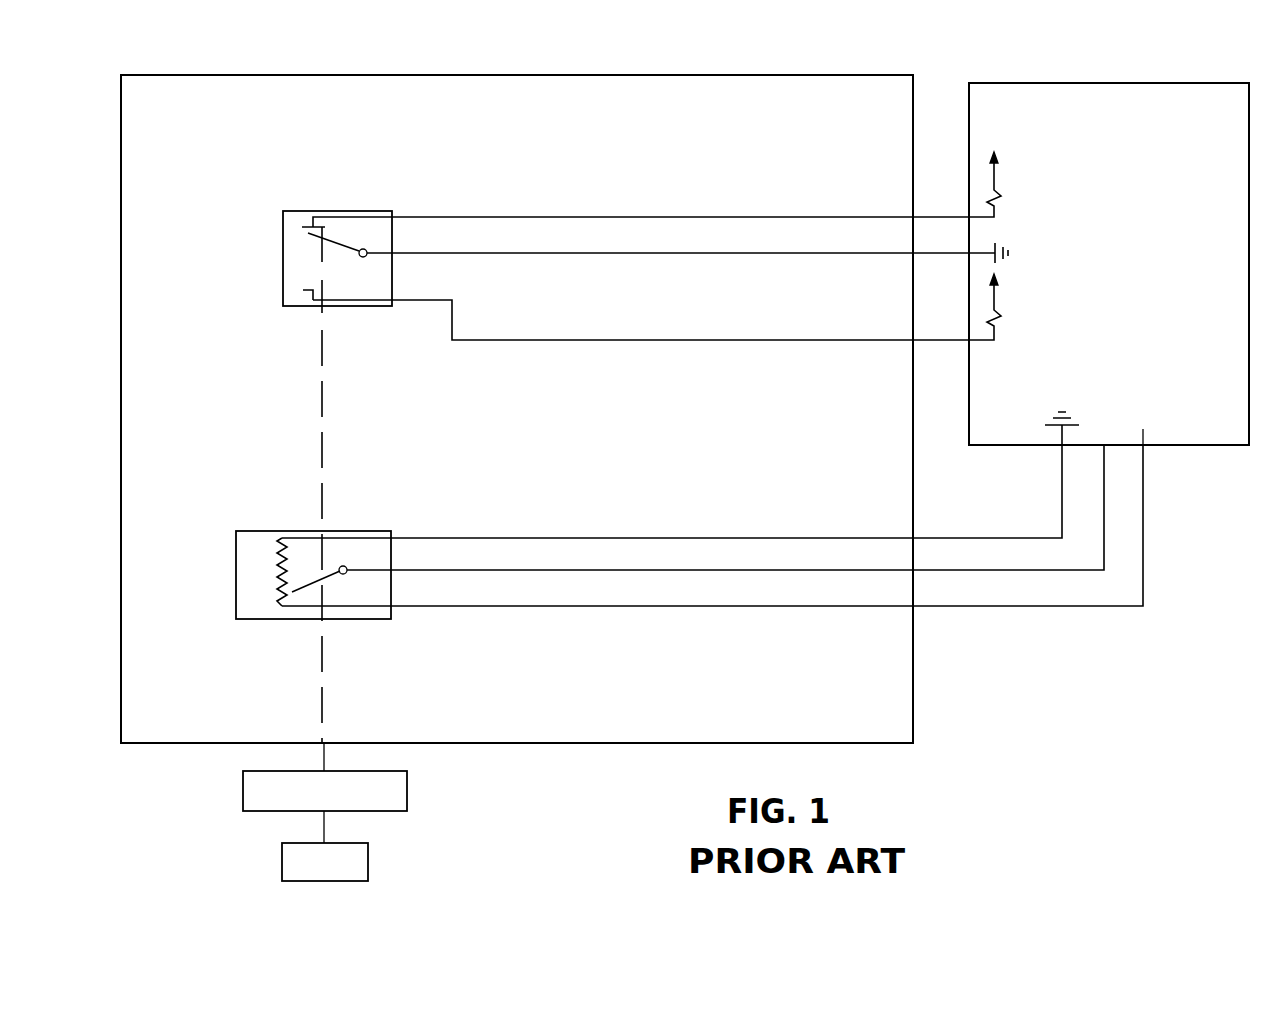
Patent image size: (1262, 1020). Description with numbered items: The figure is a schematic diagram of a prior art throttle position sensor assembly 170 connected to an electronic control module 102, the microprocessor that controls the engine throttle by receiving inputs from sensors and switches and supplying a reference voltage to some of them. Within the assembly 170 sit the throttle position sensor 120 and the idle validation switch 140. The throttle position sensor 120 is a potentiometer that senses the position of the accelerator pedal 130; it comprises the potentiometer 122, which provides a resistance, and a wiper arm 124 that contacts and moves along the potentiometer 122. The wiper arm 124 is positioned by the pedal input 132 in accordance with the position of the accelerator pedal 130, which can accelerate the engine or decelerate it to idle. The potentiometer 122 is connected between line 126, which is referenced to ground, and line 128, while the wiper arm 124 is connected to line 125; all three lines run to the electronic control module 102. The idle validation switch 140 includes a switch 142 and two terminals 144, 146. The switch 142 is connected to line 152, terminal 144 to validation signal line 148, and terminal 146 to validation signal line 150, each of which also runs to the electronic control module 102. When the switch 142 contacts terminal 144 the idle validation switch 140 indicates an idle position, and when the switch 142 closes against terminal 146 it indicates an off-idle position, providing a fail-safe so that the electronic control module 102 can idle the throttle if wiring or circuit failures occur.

The electronic control module 102 is at (1122, 83).
The throttle position sensor 120 is at (236, 565).
The potentiometer 122 is at (280, 552).
The wiper arm 124 is at (300, 582).
The line 125 is at (369, 574).
The line 126 is at (412, 536).
The line 128 is at (426, 608).
The accelerator pedal 130 is at (369, 860).
The pedal input 132 is at (408, 786).
The idle validation switch 140 is at (283, 224).
The switch 142 is at (335, 247).
The terminal 144 is at (303, 232).
The terminal 146 is at (303, 291).
The validation signal line 148 is at (438, 217).
The validation signal line 150 is at (412, 304).
The line 152 is at (460, 254).
The throttle position sensor assembly 170 is at (122, 710).